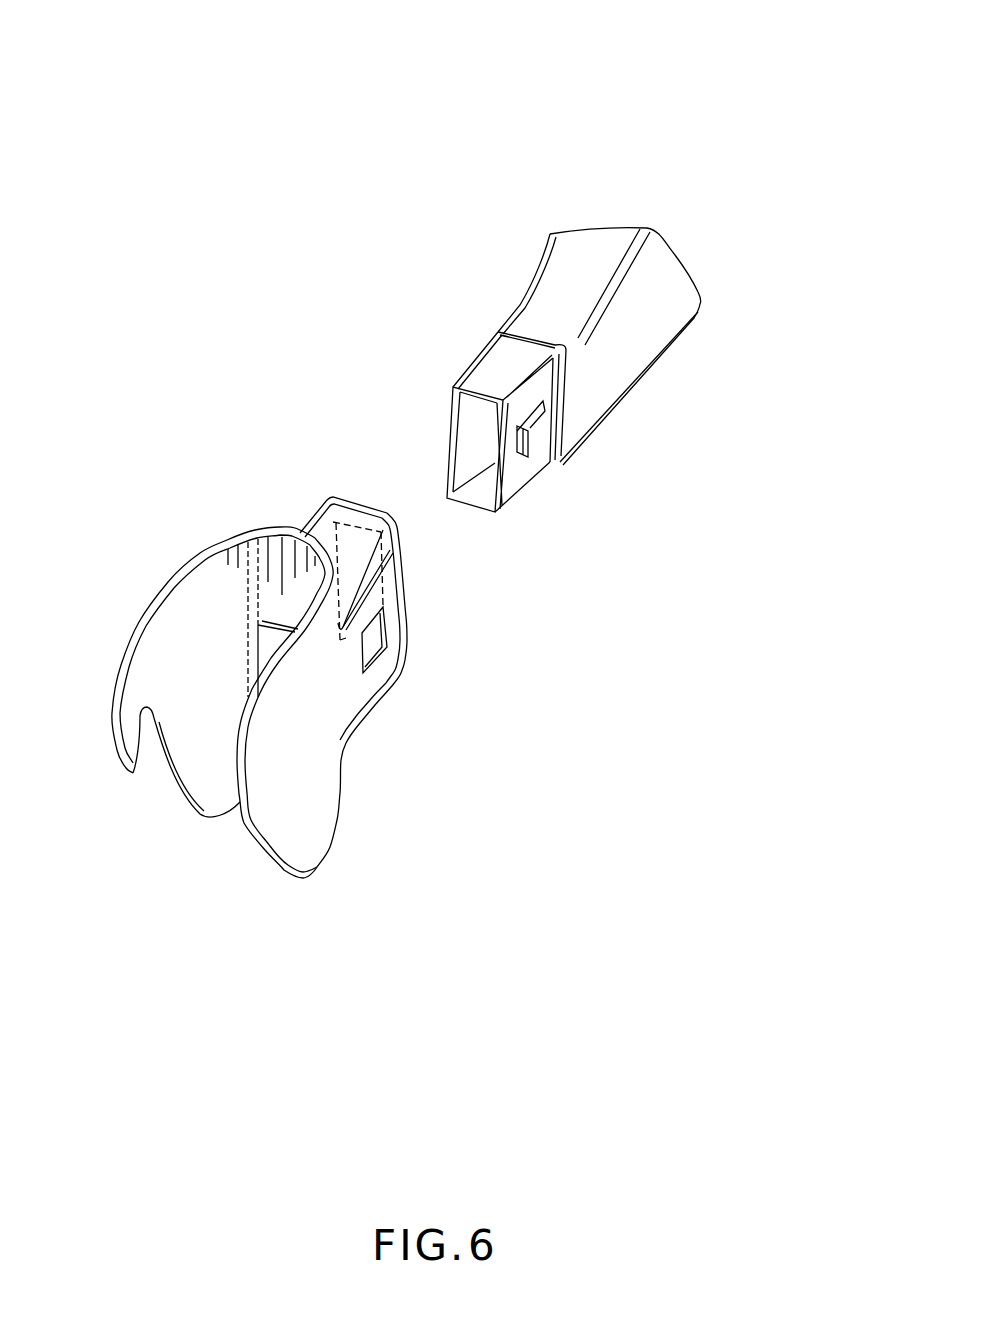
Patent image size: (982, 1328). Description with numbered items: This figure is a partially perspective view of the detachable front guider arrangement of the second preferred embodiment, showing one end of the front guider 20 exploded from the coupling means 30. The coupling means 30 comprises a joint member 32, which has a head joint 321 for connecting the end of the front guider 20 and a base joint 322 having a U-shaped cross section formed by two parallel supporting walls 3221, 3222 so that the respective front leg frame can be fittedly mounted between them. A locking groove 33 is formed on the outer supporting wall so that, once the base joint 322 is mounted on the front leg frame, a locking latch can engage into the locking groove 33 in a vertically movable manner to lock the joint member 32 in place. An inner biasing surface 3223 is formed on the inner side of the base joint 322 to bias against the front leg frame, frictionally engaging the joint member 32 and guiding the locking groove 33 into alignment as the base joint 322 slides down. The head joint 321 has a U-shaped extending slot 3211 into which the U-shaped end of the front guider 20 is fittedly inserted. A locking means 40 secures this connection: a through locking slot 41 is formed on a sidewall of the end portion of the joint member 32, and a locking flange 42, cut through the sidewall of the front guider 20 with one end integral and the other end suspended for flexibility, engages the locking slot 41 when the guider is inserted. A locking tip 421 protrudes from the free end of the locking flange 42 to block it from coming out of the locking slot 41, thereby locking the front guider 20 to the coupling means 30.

The front guider 20 is at (650, 310).
The coupling means 30 is at (165, 209).
The joint member 32 is at (265, 310).
The locking groove 33 is at (147, 772).
The locking means 40 is at (627, 680).
The locking slot 41 is at (376, 656).
The locking flange 42 is at (533, 427).
The head joint 321 is at (310, 528).
The base joint 322 is at (100, 459).
The locking tip 421 is at (522, 455).
The extending slot 3211 is at (363, 531).
The supporting wall 3221 is at (290, 773).
The supporting wall 3222 is at (177, 653).
The inner biasing surface 3223 is at (284, 588).